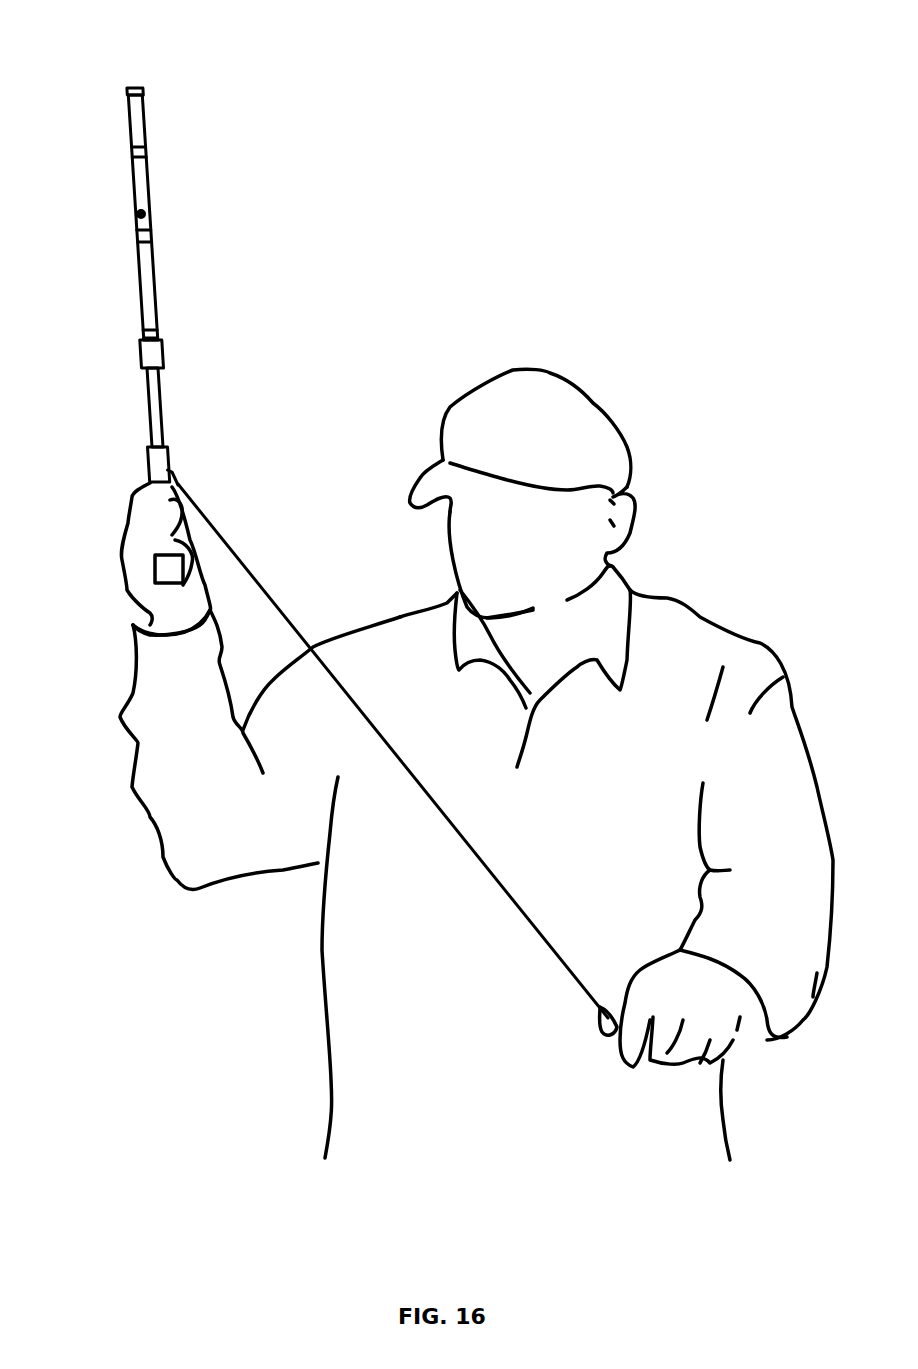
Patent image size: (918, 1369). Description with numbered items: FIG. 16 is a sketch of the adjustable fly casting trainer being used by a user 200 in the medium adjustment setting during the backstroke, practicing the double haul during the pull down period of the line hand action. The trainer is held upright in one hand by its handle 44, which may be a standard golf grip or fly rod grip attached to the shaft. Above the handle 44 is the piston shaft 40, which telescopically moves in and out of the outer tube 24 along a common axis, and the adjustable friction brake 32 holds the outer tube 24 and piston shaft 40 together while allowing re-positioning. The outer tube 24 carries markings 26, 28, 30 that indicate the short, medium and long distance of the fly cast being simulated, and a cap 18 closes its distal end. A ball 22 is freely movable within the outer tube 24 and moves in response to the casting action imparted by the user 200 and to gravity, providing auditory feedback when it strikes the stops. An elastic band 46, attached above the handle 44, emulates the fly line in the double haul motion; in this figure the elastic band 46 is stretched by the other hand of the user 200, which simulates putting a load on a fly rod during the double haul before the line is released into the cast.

The cap 18 is at (128, 90).
The ball 22 is at (153, 213).
The outer tube 24 is at (128, 175).
The marking 26 is at (150, 147).
The marking 28 is at (155, 242).
The marking 30 is at (160, 330).
The friction brake 32 is at (163, 352).
The piston shaft 40 is at (147, 413).
The handle 44 is at (147, 470).
The elastic band 46 is at (290, 612).
The user 200 is at (740, 620).